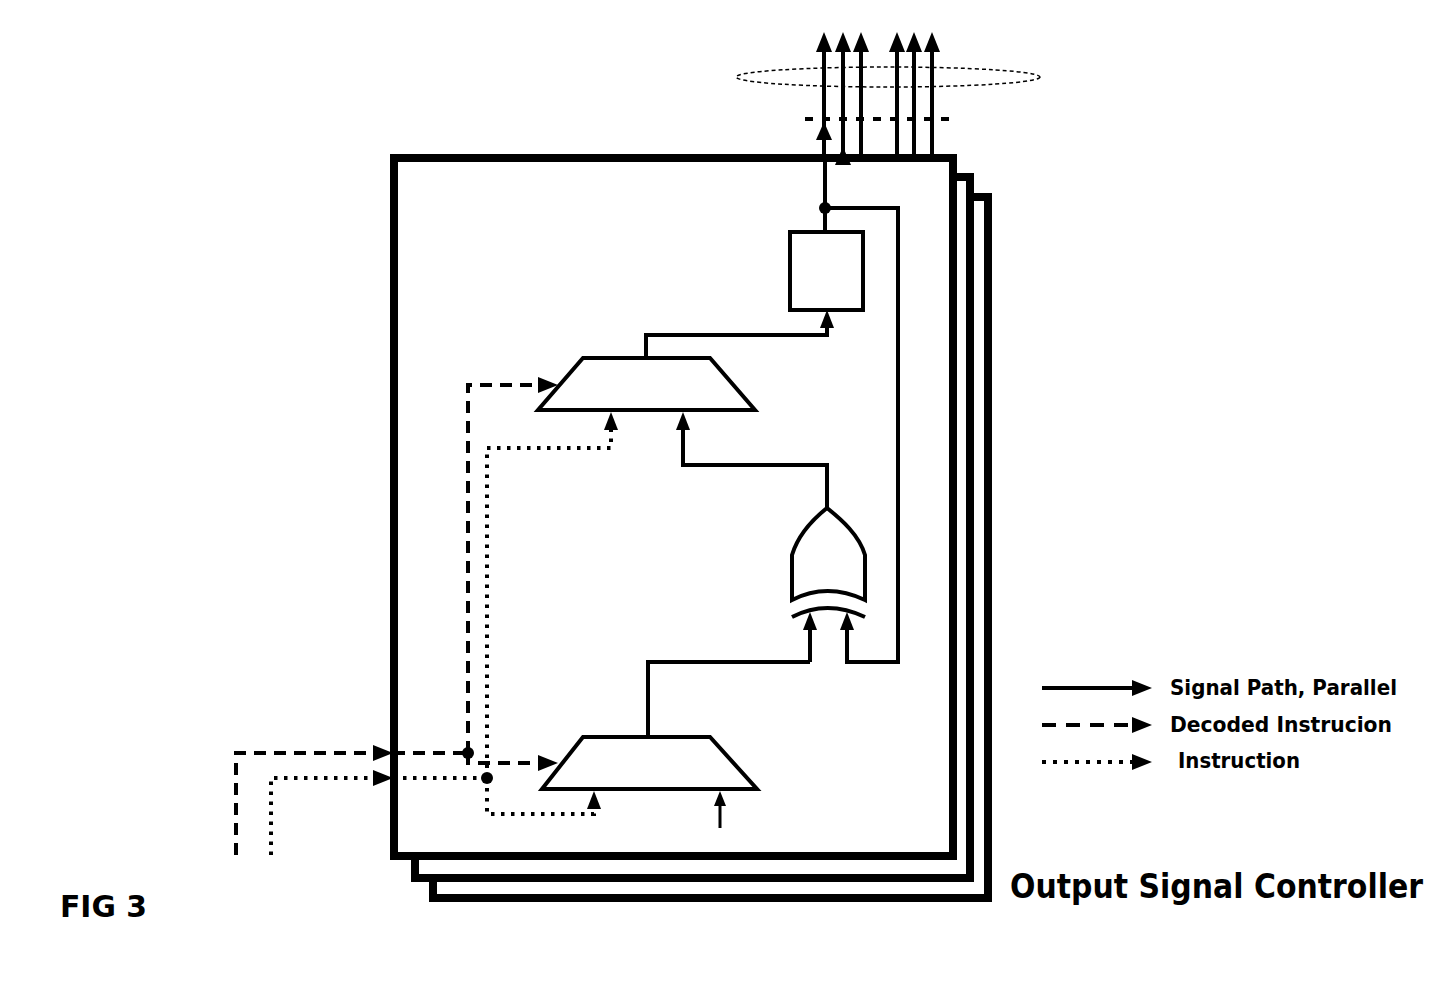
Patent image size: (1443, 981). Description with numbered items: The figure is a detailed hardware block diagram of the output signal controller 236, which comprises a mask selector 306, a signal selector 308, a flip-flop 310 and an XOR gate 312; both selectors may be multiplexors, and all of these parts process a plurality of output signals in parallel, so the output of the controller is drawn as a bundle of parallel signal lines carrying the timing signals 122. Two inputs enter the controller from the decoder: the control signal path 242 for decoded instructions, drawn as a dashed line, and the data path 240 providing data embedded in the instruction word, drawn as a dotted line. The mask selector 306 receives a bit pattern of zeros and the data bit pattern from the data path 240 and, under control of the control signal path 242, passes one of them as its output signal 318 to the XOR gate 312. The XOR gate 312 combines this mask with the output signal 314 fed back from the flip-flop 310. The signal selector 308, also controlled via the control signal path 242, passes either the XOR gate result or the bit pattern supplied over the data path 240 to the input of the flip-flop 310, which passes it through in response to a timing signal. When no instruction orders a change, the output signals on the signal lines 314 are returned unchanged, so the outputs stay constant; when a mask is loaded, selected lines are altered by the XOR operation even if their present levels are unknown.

The timing signals 122 is at (736, 78).
The output signal controller 236 is at (392, 158).
The data path 240 is at (271, 818).
The control signal path 242 is at (236, 760).
The mask selector 306 is at (583, 737).
The signal selector 308 is at (583, 358).
The flip-flop 310 is at (790, 297).
The XOR gate 312 is at (790, 582).
The output signal 314 is at (820, 214).
The output signal from the mask selector 318 is at (676, 660).